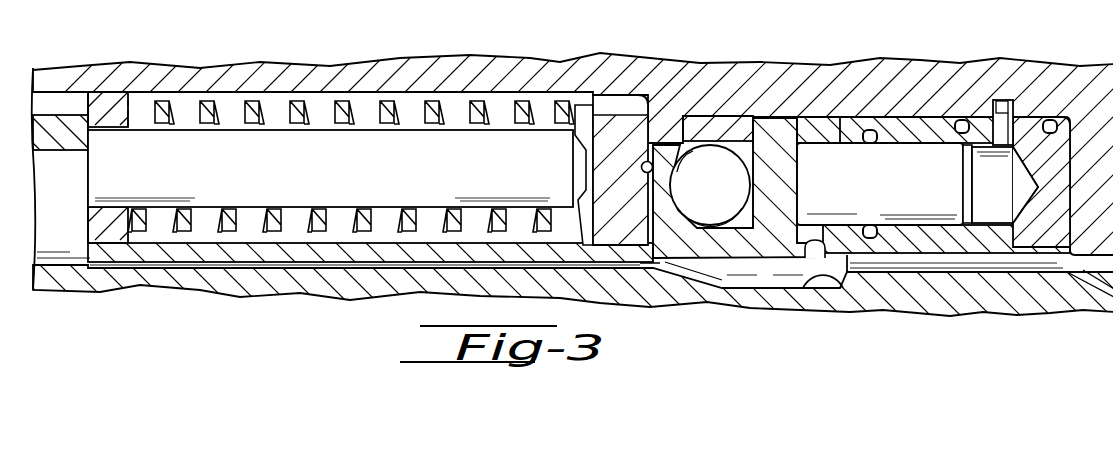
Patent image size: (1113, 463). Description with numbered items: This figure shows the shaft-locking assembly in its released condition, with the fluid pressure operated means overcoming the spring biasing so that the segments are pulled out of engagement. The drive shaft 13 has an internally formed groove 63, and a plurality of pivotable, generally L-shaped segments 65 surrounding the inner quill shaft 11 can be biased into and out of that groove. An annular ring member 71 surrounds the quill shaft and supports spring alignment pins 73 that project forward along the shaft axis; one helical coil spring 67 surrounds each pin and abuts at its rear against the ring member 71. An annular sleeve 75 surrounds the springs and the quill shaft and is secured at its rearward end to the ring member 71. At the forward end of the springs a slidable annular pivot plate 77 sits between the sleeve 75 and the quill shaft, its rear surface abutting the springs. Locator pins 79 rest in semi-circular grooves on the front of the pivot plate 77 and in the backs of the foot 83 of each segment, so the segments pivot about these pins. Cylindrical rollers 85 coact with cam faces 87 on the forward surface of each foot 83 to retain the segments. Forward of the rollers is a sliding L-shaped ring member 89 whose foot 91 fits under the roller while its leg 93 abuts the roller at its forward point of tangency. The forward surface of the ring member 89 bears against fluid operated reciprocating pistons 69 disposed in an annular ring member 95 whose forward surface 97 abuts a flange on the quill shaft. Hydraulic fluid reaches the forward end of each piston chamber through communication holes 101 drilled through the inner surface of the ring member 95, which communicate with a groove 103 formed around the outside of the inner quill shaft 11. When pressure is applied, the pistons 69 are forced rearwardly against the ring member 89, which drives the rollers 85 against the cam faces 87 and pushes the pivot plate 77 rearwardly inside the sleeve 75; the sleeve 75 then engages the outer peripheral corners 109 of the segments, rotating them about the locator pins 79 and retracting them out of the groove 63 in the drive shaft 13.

The inner quill shaft 11 is at (612, 63).
The drive shaft 13 is at (880, 303).
The internal groove 63 is at (826, 286).
The L-shaped segments 65 is at (740, 260).
The helical coil springs 67 is at (522, 110).
The reciprocating pistons 69 is at (924, 190).
The annular ring member 71 is at (103, 107).
The spring alignment pins 73 is at (315, 172).
The annular sleeve 75 is at (333, 253).
The annular pivot plate 77 is at (605, 157).
The locator pins 79 is at (652, 171).
The foot 83 is at (667, 151).
The cylindrical rollers 85 is at (740, 194).
The cam face 87 is at (681, 160).
The sliding L-shaped ring member 89 is at (750, 125).
The foot of L-shaped ring member 91 is at (697, 128).
The leg of L-shaped ring member 93 is at (786, 179).
The annular ring member 95 is at (885, 122).
The forward surface 97 is at (1037, 148).
The communication holes 101 is at (966, 124).
The groove 103 is at (997, 128).
The outer peripheral corners 109 is at (690, 297).